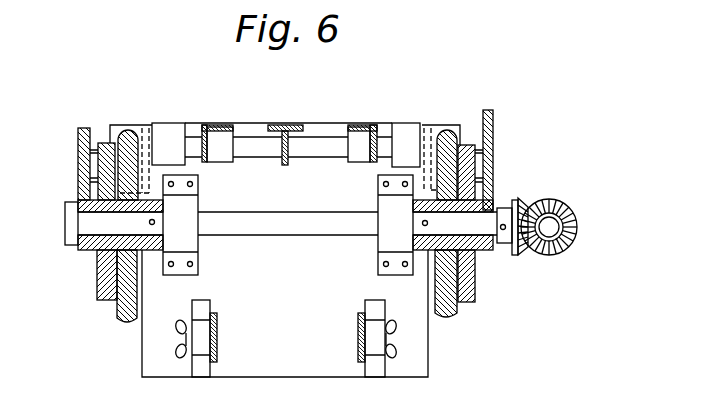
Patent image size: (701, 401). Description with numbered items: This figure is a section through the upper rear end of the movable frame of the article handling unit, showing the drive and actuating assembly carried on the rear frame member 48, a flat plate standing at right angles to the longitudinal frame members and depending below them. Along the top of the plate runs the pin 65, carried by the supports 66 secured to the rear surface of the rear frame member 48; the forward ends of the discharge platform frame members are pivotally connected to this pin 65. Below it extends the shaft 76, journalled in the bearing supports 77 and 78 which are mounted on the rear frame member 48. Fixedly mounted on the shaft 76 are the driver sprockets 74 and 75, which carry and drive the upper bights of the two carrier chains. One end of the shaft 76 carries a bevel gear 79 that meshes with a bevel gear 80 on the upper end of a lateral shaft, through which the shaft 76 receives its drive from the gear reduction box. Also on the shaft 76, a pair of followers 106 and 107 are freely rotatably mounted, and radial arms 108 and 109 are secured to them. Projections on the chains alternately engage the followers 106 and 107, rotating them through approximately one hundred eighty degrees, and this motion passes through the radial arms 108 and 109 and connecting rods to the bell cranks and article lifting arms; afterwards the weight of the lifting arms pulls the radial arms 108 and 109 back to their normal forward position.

The rear frame member 48 is at (308, 345).
The pin 65 is at (247, 137).
The supports 66 is at (166, 128).
The driver sprocket 74 is at (123, 305).
The driver sprocket 75 is at (445, 303).
The shaft 76 is at (304, 230).
The bearing support 77 is at (198, 243).
The bearing support 78 is at (385, 258).
The bevel gear 79 is at (516, 250).
The bevel gear 80 is at (558, 218).
The follower 106 is at (477, 288).
The follower 107 is at (97, 281).
The radial arm 108 is at (78, 133).
The radial arm 109 is at (491, 140).